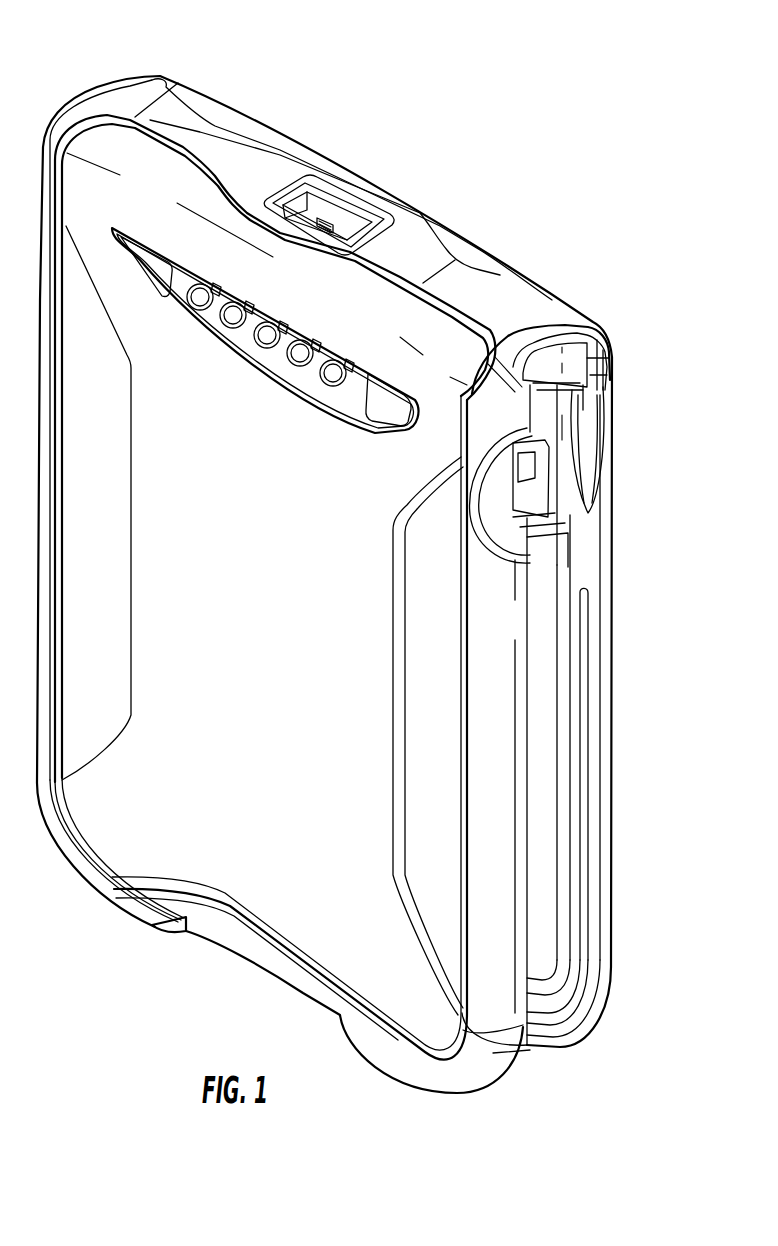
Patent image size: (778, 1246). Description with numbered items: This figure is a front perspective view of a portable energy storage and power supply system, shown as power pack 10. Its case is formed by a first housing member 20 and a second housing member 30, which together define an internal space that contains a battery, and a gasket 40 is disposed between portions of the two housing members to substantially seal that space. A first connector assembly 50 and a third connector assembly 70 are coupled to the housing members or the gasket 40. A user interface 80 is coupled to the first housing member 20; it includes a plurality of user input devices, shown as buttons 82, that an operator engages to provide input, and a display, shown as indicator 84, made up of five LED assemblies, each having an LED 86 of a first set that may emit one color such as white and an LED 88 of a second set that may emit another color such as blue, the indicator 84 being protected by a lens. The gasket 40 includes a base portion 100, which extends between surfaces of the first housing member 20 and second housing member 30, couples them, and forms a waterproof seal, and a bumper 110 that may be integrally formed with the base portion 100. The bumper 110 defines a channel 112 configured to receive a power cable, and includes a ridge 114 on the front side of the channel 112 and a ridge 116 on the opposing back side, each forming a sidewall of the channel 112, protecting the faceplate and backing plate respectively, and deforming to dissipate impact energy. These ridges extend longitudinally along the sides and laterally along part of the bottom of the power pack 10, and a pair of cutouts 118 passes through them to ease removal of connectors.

The power pack 10 is at (605, 257).
The first housing member 20 is at (430, 1033).
The second housing member 30 is at (485, 256).
The gasket 40 is at (125, 79).
The first connector assembly 50 is at (373, 206).
The third connector assembly 70 is at (545, 428).
The user interface 80 is at (227, 369).
The buttons 82 is at (152, 271).
The indicator 84 is at (315, 399).
The LED 86 is at (266, 325).
The LED 88 is at (257, 320).
The base portion 100 is at (518, 327).
The bumper 110 is at (613, 527).
The channel 112 is at (546, 864).
The ridge 114 is at (496, 1056).
The ridge 116 is at (600, 948).
The cutouts 118 is at (590, 488).